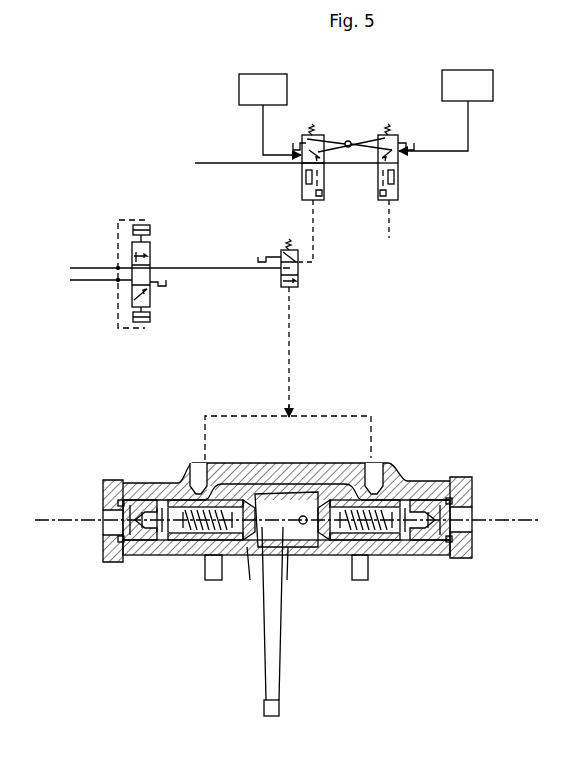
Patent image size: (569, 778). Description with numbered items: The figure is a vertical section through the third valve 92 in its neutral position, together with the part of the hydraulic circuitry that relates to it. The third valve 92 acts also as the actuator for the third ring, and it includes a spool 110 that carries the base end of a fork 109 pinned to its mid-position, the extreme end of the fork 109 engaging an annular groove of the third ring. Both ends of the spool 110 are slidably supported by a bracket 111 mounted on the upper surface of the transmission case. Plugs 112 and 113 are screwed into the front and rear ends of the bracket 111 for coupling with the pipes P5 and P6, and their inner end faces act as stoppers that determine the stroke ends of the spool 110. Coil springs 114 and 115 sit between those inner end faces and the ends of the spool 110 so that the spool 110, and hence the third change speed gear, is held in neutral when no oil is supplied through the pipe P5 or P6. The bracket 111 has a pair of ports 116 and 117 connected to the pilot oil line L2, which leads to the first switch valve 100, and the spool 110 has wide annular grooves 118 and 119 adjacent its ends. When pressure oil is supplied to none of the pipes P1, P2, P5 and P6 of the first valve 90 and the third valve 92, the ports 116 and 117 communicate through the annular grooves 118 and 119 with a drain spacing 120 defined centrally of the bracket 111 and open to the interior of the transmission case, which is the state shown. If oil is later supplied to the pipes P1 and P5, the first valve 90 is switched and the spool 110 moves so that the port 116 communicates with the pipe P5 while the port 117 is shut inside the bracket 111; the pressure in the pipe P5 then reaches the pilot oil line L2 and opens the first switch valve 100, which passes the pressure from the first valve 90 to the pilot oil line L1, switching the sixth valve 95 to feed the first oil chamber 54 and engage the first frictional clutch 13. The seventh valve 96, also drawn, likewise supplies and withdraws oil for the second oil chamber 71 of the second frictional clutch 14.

The second hydraulically operated frictional clutch 14 is at (236, 91).
The second oil chamber 71 is at (263, 89).
The first hydraulically operated frictional clutch 13 is at (440, 86).
The first oil chamber 54 is at (467, 85).
The sixth valve 95 is at (300, 191).
The seventh valve 96 is at (400, 190).
The first valve 90 is at (153, 252).
The first switch valve 100 is at (300, 275).
The pilot oil line L1 is at (316, 236).
The pilot oil line L2 is at (291, 338).
The pipe P1 is at (78, 266).
The pipe P2 is at (78, 282).
The pipe P5 is at (70, 520).
The pipe P6 is at (520, 519).
The third valve 92 is at (281, 558).
The bracket 111 is at (306, 464).
The port 116 is at (196, 482).
The port 117 is at (374, 478).
The drain spacing 120 is at (246, 484).
The plug 112 is at (108, 565).
The plug 113 is at (472, 556).
The coil spring 114 is at (152, 558).
The coil spring 115 is at (412, 560).
The annular groove 118 is at (200, 558).
The annular groove 119 is at (376, 558).
The spool 110 is at (250, 560).
The fork 109 is at (272, 680).